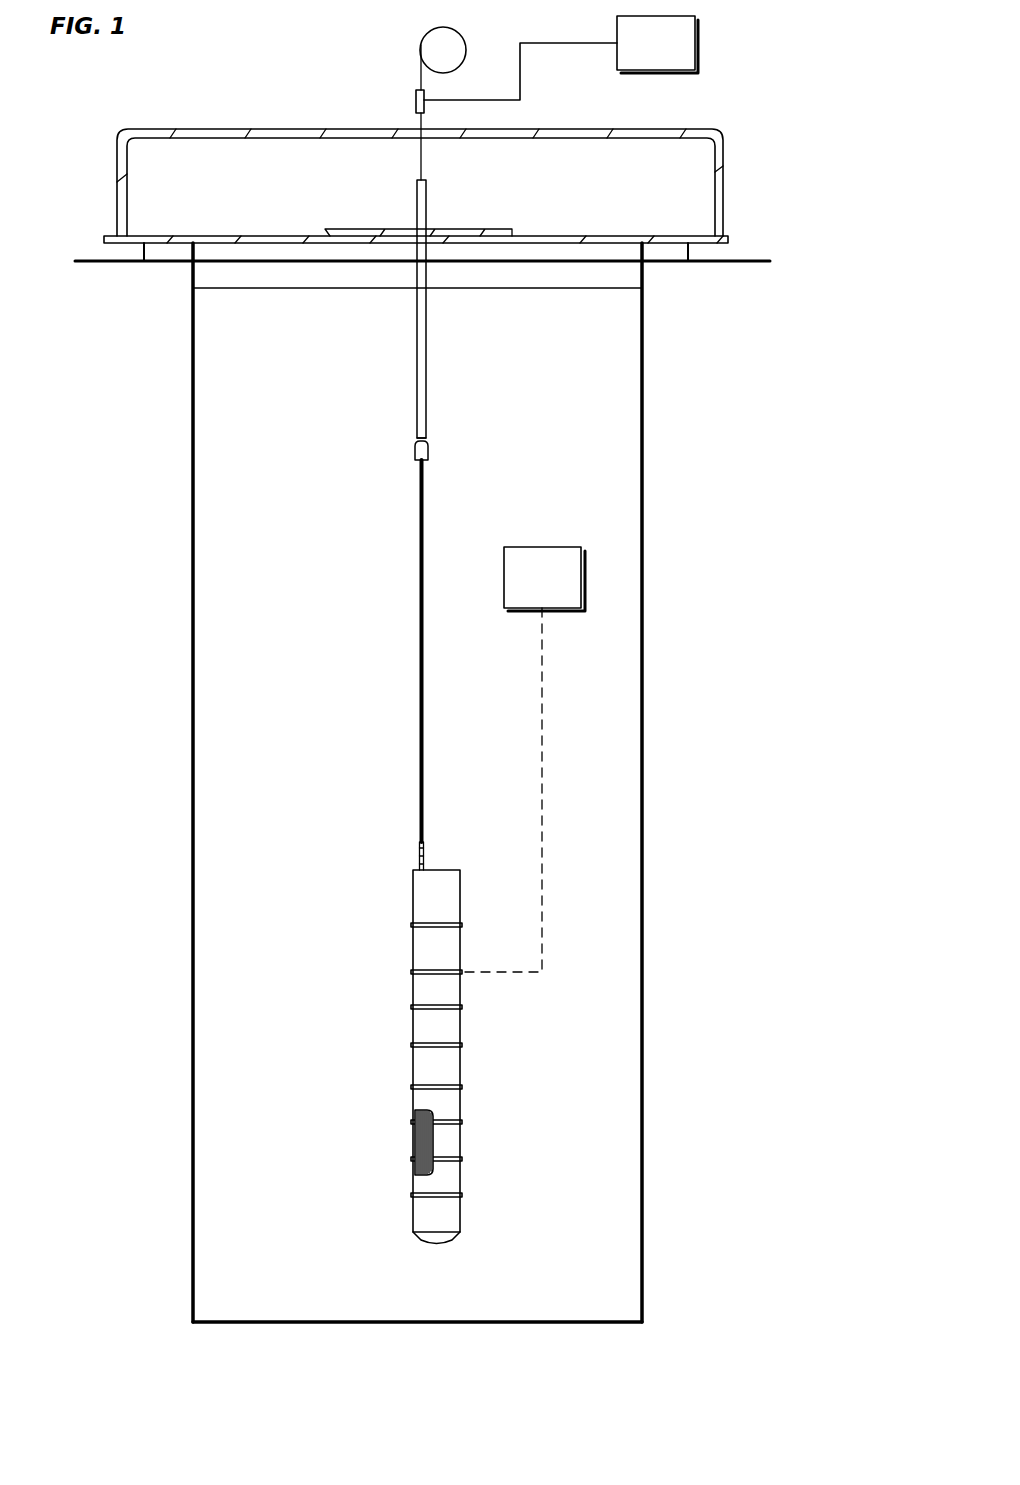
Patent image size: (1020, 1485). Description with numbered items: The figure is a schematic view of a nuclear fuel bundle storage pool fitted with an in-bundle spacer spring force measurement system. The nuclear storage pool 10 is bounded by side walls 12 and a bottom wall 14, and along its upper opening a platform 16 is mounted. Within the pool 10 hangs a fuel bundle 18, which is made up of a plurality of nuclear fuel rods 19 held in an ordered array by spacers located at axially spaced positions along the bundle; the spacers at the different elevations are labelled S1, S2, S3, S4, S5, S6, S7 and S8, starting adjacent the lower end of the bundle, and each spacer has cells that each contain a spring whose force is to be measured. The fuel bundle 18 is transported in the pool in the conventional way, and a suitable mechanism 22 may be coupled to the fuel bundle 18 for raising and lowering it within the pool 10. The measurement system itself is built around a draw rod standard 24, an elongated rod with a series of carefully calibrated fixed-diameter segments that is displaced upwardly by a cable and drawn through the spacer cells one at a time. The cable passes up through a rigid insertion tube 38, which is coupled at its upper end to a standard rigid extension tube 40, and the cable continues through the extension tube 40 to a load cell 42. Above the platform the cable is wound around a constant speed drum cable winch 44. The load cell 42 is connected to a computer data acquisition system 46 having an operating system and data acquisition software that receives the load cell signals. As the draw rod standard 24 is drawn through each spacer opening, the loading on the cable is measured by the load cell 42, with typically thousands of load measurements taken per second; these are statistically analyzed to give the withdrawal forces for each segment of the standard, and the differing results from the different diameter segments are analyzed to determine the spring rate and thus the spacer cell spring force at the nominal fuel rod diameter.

The nuclear storage pool 10 is at (134, 558).
The side walls 12 is at (190, 943).
The bottom wall 14 is at (197, 1330).
The platform 16 is at (190, 130).
The fuel bundle 18 is at (460, 935).
The nuclear fuel rods 19 is at (421, 1148).
The mechanism 22 is at (556, 587).
The draw rod standard 24 is at (418, 856).
The rigid insertion tube 38 is at (417, 690).
The rigid extension tube 40 is at (414, 378).
The load cell 42 is at (416, 100).
The constant speed drum cable winch 44 is at (428, 50).
The computer data acquisition system 46 is at (670, 55).
The spacer S1 is at (426, 1192).
The spacer S2 is at (445, 1162).
The spacer S3 is at (445, 1125).
The spacer S4 is at (426, 1084).
The spacer S5 is at (426, 1043).
The spacer S6 is at (446, 1012).
The spacer S7 is at (426, 969).
The spacer S8 is at (426, 922).